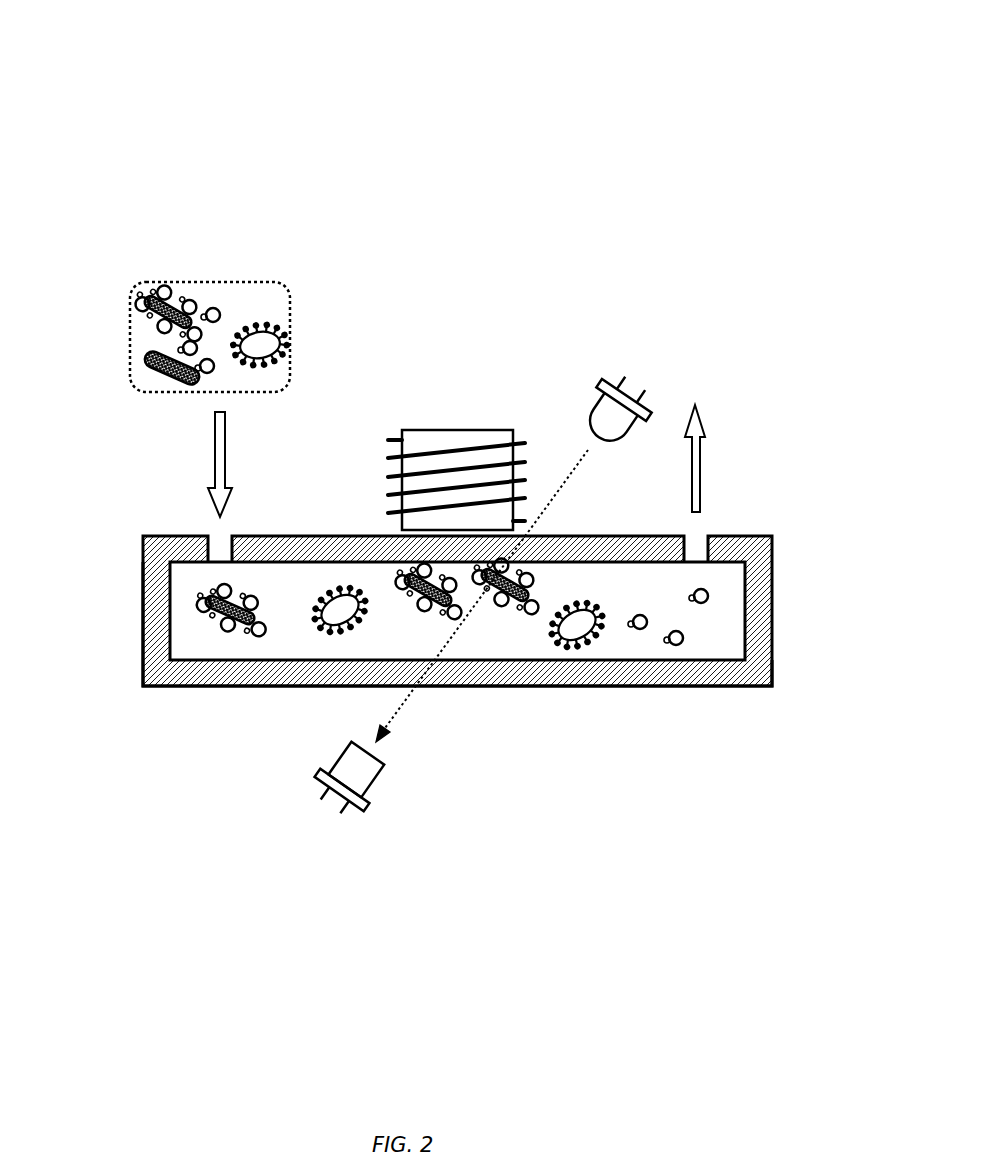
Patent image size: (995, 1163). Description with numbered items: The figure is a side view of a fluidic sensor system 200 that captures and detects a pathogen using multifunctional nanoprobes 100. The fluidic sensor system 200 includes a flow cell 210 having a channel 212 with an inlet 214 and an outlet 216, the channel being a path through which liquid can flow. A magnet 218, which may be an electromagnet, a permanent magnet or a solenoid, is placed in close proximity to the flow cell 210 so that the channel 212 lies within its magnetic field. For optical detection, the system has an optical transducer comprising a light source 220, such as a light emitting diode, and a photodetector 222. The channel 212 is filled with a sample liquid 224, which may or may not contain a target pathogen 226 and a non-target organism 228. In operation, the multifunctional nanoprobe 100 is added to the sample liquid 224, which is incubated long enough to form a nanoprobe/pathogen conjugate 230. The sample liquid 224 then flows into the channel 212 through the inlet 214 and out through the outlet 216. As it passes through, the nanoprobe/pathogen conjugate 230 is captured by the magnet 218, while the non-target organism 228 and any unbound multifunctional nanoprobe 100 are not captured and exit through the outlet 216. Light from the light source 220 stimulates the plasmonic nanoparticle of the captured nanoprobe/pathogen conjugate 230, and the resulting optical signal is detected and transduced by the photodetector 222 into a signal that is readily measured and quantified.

The fluidic sensor system 200 is at (82, 78).
The flow cell 210 is at (796, 572).
The channel 212 is at (172, 625).
The inlet 214 is at (231, 535).
The outlet 216 is at (702, 535).
The magnet 218 is at (458, 430).
The light source 220 is at (600, 388).
The photodetector 222 is at (317, 772).
The sample liquid 224 is at (277, 283).
The target pathogen 226 is at (135, 360).
The non-target organism 228 is at (278, 343).
The nanoprobe/pathogen conjugate 230 is at (132, 298).
The multifunctional nanoprobe 100 is at (231, 293).